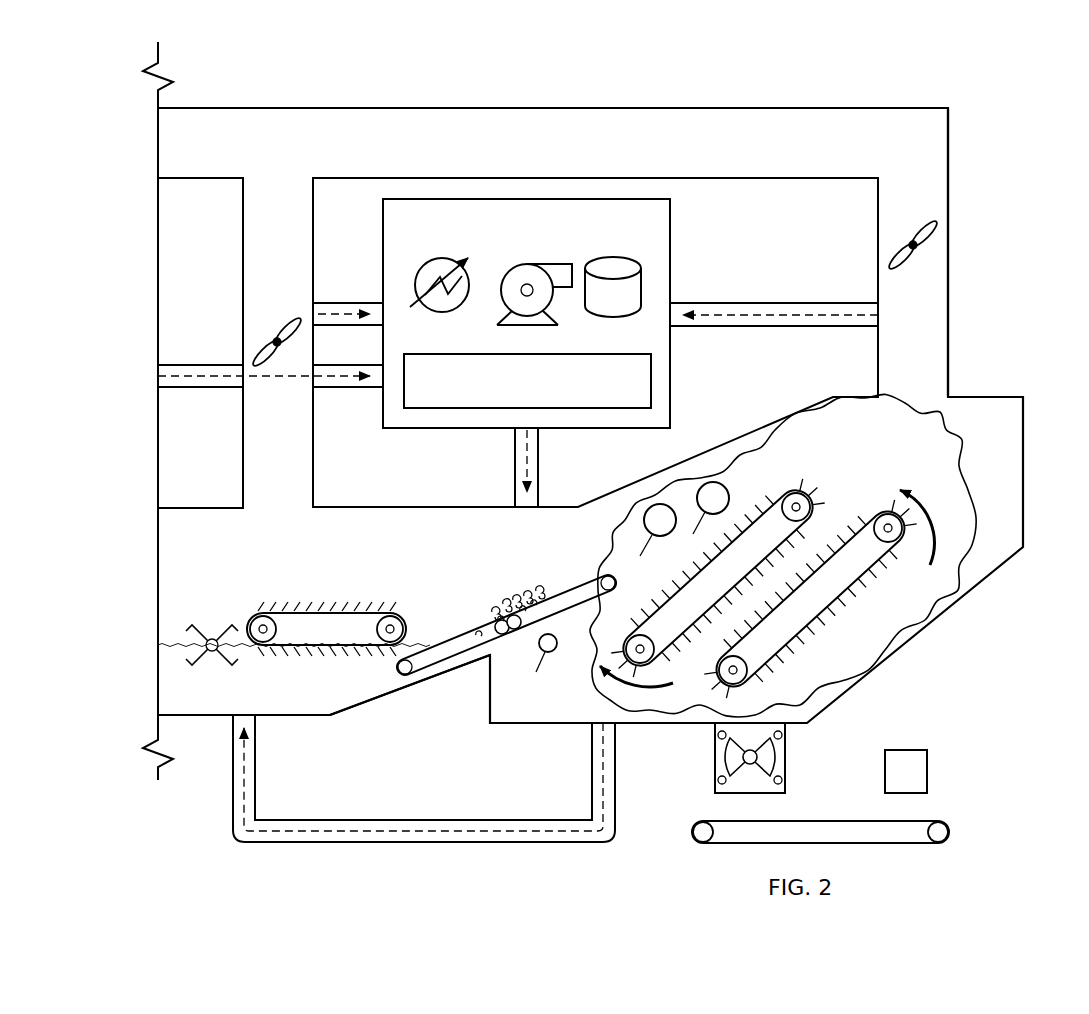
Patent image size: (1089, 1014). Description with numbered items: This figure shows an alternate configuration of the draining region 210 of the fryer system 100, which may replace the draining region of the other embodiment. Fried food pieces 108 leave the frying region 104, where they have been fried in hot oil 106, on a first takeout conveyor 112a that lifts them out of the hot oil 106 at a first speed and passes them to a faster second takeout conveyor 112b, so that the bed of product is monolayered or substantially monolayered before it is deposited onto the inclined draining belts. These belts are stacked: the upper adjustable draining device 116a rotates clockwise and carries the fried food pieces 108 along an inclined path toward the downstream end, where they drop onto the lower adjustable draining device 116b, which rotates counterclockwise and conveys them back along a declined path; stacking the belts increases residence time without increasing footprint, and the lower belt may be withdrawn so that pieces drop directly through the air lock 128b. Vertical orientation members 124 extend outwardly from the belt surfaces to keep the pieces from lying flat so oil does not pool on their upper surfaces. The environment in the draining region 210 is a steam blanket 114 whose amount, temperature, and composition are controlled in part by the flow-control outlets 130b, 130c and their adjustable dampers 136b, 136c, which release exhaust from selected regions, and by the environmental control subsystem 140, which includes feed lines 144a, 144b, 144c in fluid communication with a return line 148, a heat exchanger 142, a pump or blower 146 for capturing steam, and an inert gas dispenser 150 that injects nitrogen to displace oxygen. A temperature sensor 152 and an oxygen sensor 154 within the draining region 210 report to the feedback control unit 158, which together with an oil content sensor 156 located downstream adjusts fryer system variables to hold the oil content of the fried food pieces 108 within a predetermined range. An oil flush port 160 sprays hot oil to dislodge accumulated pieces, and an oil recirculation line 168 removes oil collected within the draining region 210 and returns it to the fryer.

The fryer system 100 is at (990, 79).
The frying region 104 is at (130, 686).
The hot oil 106 is at (292, 718).
The fried food pieces 108 is at (488, 586).
The first takeout conveyor 112a is at (494, 628).
The second takeout conveyor 112b is at (549, 601).
The steam blanket 114 is at (892, 398).
The upper adjustable draining device 116a is at (810, 484).
The lower adjustable draining device 116b is at (700, 708).
The vertical orientation members 124 is at (796, 482).
The air lock 128b is at (786, 757).
The flow-control outlet 130b is at (243, 272).
The flow-control outlet 130c is at (949, 262).
The damper 136b is at (278, 326).
The damper 136c is at (916, 232).
The environmental control subsystem 140 is at (680, 246).
The heat exchanger 142 is at (470, 262).
The feed line 144a is at (200, 365).
The feed line 144b is at (340, 303).
The feed line 144c is at (780, 303).
The blower 146 is at (550, 262).
The return line 148 is at (515, 472).
The inert gas dispenser 150 is at (630, 257).
The temperature sensor 152 is at (662, 504).
The oxygen sensor 154 is at (716, 482).
The oil content sensor 156 is at (908, 750).
The feedback control unit 158 is at (544, 392).
The oil flush port 160 is at (539, 670).
The oil recirculation line 168 is at (592, 780).
The draining region 210 is at (995, 678).